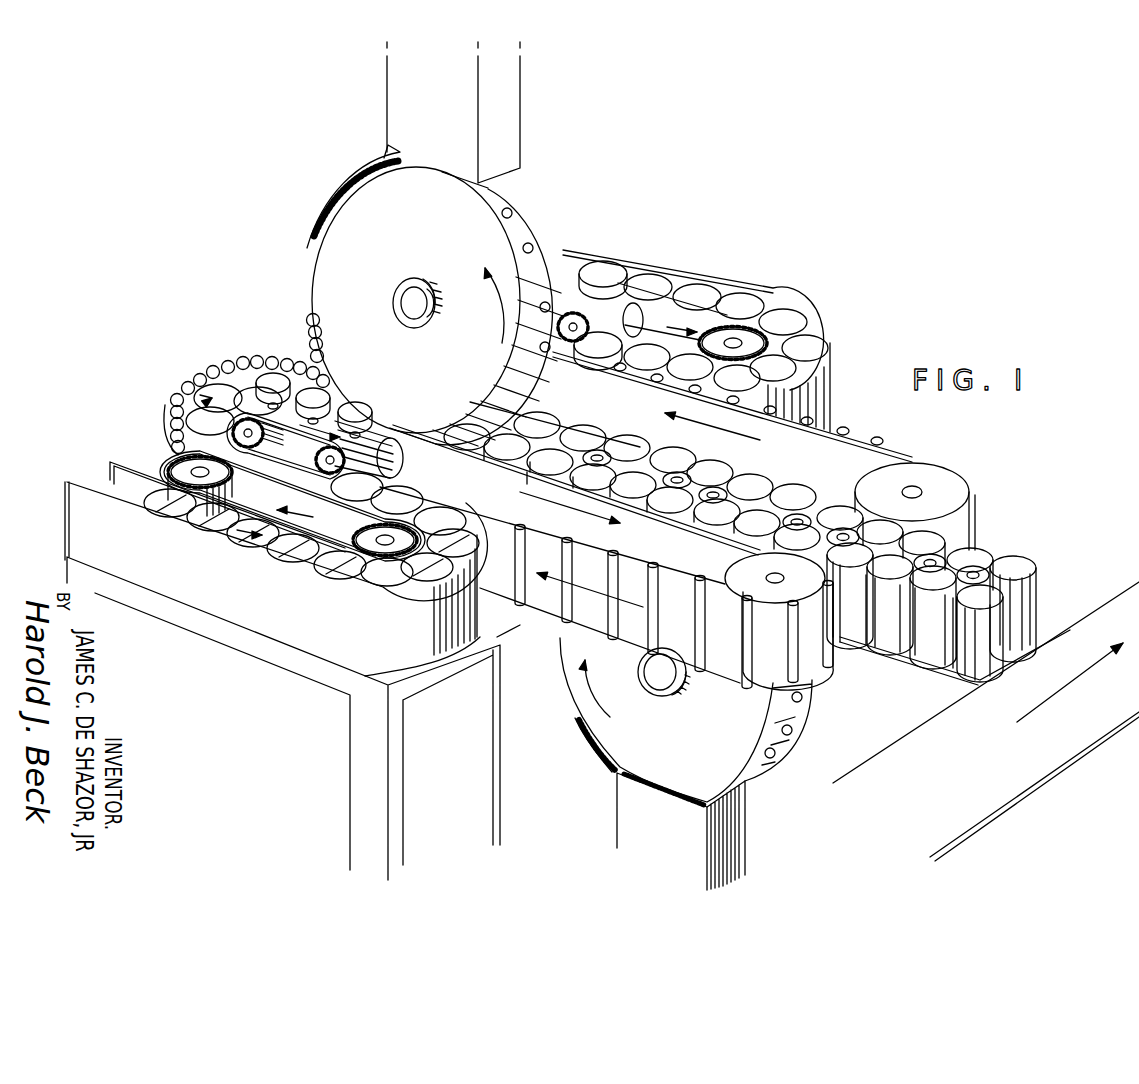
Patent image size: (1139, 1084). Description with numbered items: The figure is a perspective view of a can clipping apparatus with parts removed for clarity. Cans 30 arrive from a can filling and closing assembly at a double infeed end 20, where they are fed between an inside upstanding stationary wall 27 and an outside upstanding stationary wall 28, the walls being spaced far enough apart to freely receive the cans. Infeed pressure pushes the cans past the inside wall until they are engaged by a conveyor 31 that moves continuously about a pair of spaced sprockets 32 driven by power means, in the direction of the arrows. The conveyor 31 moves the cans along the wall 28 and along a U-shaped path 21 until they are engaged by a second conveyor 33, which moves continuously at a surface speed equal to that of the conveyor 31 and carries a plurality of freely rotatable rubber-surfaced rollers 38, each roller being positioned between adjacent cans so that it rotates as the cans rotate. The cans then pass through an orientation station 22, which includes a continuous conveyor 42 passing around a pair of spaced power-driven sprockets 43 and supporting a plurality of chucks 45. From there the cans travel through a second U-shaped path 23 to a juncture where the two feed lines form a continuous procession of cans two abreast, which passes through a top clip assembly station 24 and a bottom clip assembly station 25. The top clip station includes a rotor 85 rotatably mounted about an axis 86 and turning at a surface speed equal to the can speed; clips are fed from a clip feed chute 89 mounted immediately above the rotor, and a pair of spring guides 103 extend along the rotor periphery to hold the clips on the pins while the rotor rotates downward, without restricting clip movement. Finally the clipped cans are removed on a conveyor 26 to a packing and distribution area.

The double infeed end 20 is at (561, 243).
The U-shaped path 21 is at (790, 296).
The orientation station 22 is at (262, 356).
The second U-shaped path 23 is at (173, 388).
The top clip assembly station 24 is at (312, 214).
The bottom clip assembly station 25 is at (815, 700).
The conveyor 26 is at (1073, 728).
The inside upstanding stationary wall 27 is at (138, 476).
The outside upstanding stationary wall 28 is at (80, 525).
The cans 30 is at (210, 522).
The conveyor 31 is at (315, 548).
The sprockets 32 is at (172, 458).
The second conveyor 33 is at (771, 668).
The roller 38 is at (562, 633).
The continuous conveyor 42 is at (265, 422).
The sprockets 43 is at (240, 423).
The chucks 45 is at (318, 390).
The rotor 85 is at (466, 232).
The axis 86 is at (421, 308).
The clip feed chute 89 is at (500, 128).
The spring guides 103 is at (365, 166).